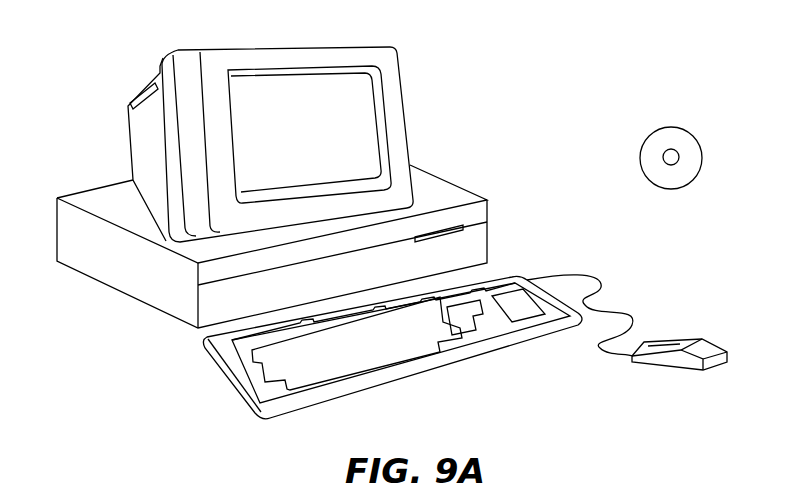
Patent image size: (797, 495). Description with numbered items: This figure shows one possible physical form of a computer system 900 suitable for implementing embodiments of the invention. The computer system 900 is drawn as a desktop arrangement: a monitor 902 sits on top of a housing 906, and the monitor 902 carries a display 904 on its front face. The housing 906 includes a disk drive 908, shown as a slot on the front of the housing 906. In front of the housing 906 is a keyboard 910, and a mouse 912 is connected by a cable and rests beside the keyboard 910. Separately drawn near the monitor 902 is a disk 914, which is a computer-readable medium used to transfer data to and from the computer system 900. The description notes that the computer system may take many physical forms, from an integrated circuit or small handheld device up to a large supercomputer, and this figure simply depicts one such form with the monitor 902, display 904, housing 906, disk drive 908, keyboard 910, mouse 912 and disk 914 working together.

The computer system 900 is at (595, 43).
The monitor 902 is at (410, 143).
The display 904 is at (370, 98).
The housing 906 is at (140, 188).
The disk drive 908 is at (463, 225).
The keyboard 910 is at (397, 382).
The mouse 912 is at (715, 342).
The disk 914 is at (687, 132).